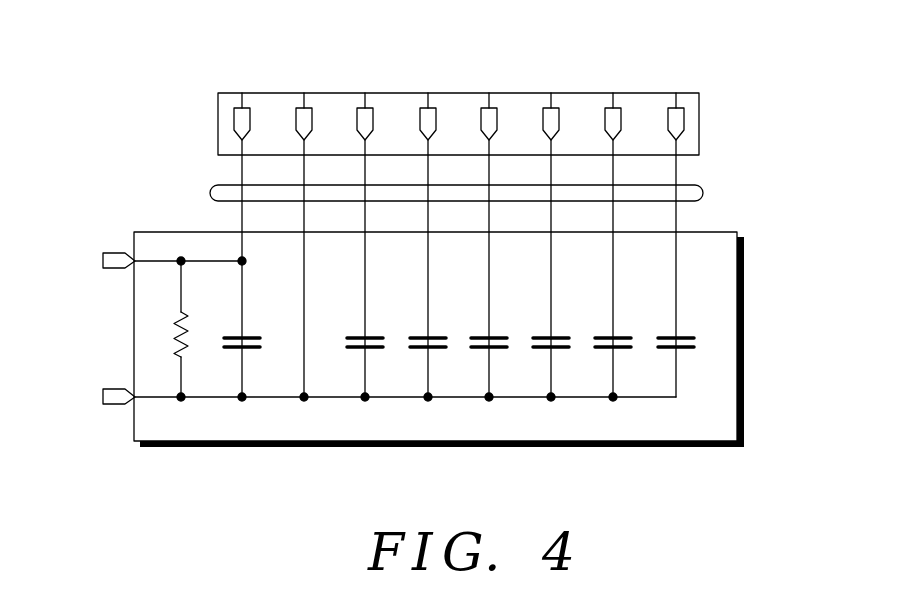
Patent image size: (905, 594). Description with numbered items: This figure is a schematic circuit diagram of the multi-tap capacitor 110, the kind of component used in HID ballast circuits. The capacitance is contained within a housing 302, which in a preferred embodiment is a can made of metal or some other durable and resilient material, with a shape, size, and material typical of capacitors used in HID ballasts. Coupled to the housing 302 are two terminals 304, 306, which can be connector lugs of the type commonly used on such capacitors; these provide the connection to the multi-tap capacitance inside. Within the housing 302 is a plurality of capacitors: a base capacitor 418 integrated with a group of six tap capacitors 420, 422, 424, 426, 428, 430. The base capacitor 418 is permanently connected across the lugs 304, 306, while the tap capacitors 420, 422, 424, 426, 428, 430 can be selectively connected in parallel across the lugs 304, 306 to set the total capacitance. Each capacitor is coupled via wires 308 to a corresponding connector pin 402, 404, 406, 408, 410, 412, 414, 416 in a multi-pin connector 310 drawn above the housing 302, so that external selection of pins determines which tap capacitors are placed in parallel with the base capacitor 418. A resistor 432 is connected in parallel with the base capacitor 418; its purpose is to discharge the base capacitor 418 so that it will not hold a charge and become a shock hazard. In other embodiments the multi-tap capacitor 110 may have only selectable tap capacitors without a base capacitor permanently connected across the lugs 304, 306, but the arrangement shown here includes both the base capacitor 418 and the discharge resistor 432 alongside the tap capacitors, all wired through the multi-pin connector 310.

The multi-tap capacitor 110 is at (150, 143).
The housing 302 is at (622, 442).
The terminal 304 is at (103, 266).
The terminal 306 is at (103, 402).
The wires 308 is at (704, 194).
The multi-pin connector 310 is at (699, 128).
The connector pin 402 is at (242, 93).
The connector pin 404 is at (304, 93).
The connector pin 406 is at (365, 93).
The connector pin 408 is at (428, 93).
The connector pin 410 is at (489, 93).
The connector pin 412 is at (551, 93).
The connector pin 414 is at (613, 93).
The connector pin 416 is at (676, 93).
The base capacitor 418 is at (256, 337).
The tap capacitor 420 is at (379, 337).
The tap capacitor 422 is at (442, 337).
The tap capacitor 424 is at (503, 337).
The tap capacitor 426 is at (565, 337).
The tap capacitor 428 is at (627, 337).
The tap capacitor 430 is at (690, 337).
The resistor 432 is at (190, 326).